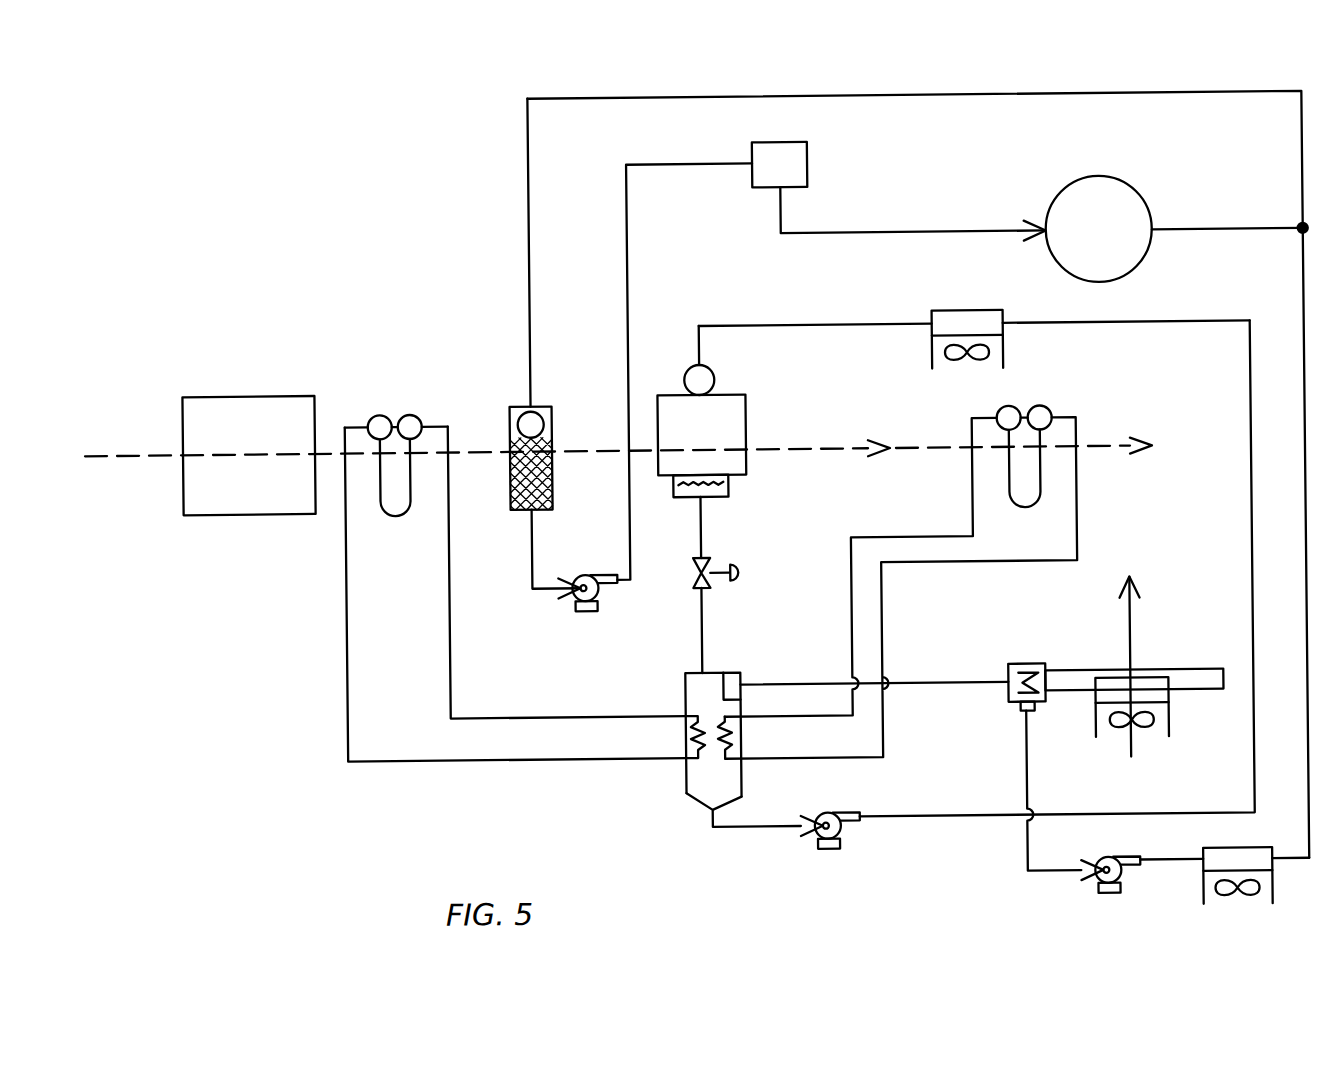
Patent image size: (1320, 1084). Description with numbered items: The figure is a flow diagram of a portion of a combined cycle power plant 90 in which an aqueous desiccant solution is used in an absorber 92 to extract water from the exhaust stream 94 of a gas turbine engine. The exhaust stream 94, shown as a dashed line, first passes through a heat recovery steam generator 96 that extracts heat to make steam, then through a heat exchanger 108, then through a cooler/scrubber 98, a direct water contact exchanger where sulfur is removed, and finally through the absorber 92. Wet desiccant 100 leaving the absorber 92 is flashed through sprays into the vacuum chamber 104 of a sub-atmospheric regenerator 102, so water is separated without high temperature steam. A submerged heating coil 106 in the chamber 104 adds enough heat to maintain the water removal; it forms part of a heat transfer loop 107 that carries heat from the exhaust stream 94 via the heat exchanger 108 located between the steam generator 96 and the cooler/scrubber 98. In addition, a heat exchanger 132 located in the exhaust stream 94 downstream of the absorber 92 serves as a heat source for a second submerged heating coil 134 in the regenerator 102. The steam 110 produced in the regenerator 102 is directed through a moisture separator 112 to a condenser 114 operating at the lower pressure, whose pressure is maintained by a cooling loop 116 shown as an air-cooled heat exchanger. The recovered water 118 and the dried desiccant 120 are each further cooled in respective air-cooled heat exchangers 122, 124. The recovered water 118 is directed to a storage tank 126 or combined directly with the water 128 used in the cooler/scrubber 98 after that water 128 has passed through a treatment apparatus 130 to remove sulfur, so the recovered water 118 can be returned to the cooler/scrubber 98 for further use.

The combined cycle power plant 90 is at (346, 230).
The absorber 92 is at (746, 418).
The exhaust stream 94 is at (158, 452).
The heat recovery steam generator 96 is at (282, 392).
The cooler/scrubber 98 is at (520, 404).
The wet desiccant 100 is at (702, 529).
The sub-atmospheric regenerator 102 is at (695, 797).
The vacuum chamber 104 is at (683, 686).
The submerged heating coil 106 is at (675, 744).
The heat transfer loop 107 is at (312, 739).
The heat exchanger 108 is at (394, 516).
The steam 110 is at (912, 688).
The moisture separator 112 is at (729, 680).
The condenser 114 is at (1017, 667).
The cooling loop 116 is at (1093, 633).
The recovered water 118 is at (1024, 851).
The dried desiccant 120 is at (1251, 484).
The air-cooled heat exchanger 122 is at (1199, 876).
The air-cooled heat exchanger 124 is at (940, 313).
The storage tank 126 is at (1103, 180).
The water 128 is at (913, 233).
The treatment apparatus 130 is at (810, 168).
The heat exchanger 132 is at (1035, 512).
The submerged heating coil 134 is at (734, 744).